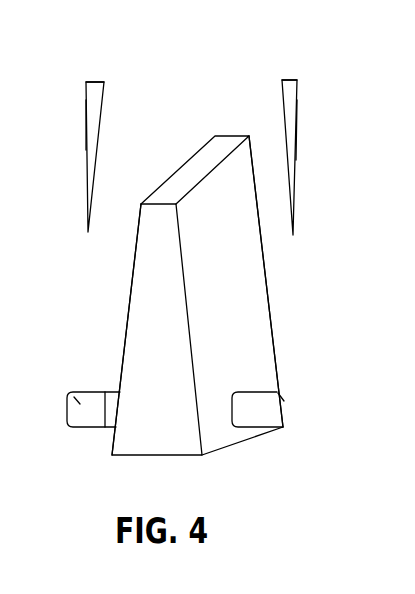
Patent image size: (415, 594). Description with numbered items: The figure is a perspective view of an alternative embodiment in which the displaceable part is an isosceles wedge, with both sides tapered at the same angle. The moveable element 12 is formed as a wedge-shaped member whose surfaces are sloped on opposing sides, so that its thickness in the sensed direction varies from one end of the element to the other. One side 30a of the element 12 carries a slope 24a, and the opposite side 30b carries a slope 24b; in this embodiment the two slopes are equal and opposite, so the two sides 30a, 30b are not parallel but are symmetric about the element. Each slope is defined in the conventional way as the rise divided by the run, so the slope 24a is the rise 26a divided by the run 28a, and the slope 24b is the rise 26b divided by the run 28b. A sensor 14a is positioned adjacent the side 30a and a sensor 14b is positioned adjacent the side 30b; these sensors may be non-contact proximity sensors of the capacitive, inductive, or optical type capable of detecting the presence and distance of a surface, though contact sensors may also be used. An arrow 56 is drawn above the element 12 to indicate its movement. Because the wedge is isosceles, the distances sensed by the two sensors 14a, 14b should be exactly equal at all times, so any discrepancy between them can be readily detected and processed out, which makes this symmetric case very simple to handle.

The moveable element 12 is at (172, 366).
The sensor 14a is at (85, 427).
The sensor 14b is at (260, 427).
The slope 24a is at (100, 160).
The slope 24b is at (283, 128).
The rise 26a is at (87, 128).
The rise 26b is at (298, 148).
The run 28a is at (93, 82).
The run 28b is at (287, 80).
The side 30a is at (158, 302).
The side 30b is at (246, 313).
The direction of movement 56 is at (193, 84).